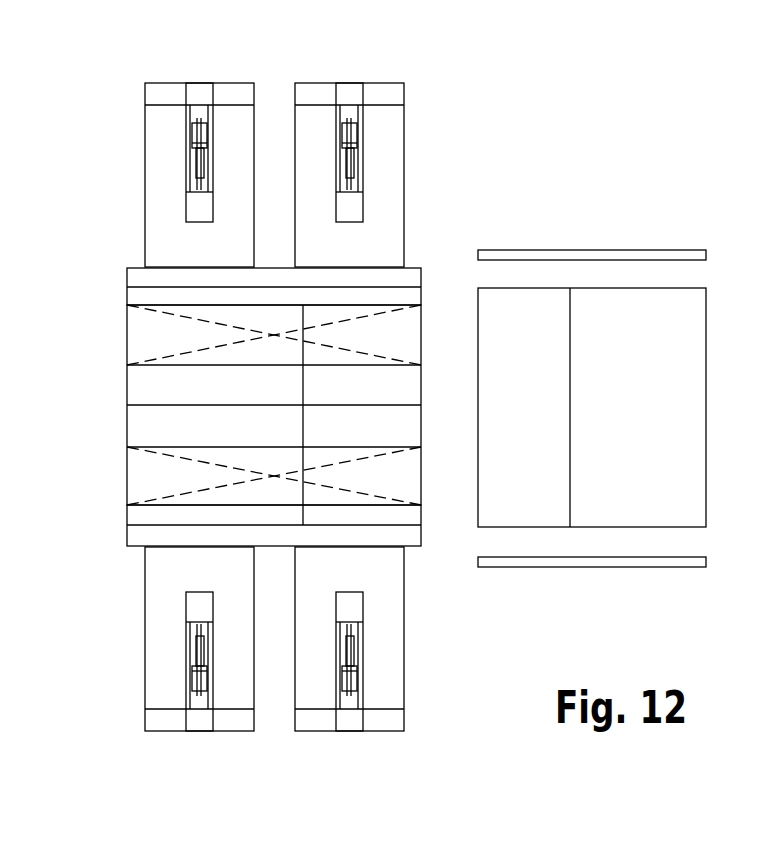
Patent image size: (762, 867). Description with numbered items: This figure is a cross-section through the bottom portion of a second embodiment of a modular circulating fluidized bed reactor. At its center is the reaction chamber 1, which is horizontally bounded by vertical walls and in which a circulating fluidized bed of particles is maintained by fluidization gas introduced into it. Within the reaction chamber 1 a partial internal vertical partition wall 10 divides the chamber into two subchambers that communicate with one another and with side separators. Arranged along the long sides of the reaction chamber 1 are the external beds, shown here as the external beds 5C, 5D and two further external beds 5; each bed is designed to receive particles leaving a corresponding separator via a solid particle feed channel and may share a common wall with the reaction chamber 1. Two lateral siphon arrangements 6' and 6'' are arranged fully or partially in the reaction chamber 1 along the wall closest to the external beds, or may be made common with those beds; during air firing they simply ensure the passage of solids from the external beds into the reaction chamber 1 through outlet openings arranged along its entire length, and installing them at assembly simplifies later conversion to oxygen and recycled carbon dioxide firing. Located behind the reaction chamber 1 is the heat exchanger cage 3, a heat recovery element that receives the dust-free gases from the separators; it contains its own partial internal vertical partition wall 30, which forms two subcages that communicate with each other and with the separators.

The reaction chamber 1 is at (277, 382).
The heat exchanger cage 3 is at (614, 384).
The external bed 5 is at (165, 645).
The external bed 5C is at (232, 137).
The external bed 5D is at (383, 148).
The lateral siphon arrangement 6' is at (303, 252).
The lateral siphon arrangement 6'' is at (295, 550).
The partial internal vertical partition wall 10 is at (303, 385).
The partial internal vertical partition wall 30 is at (570, 330).